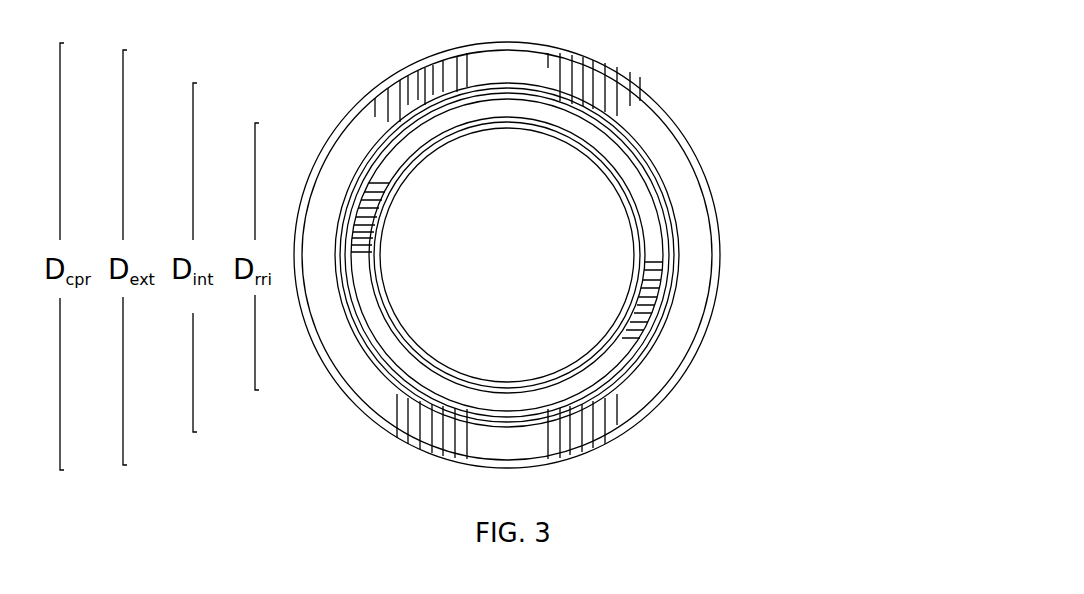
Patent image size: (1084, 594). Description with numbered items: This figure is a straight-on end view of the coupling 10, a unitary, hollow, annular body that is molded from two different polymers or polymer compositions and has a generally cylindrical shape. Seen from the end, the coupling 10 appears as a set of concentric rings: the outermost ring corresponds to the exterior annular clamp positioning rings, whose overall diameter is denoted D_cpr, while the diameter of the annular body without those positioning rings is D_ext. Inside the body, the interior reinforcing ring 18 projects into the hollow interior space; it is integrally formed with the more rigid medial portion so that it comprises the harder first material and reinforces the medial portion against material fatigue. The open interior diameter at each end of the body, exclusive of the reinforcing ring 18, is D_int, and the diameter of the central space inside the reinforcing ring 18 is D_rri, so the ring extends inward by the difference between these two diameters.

The coupling 10 is at (625, 255).
The interior reinforcing ring 18 is at (603, 145).